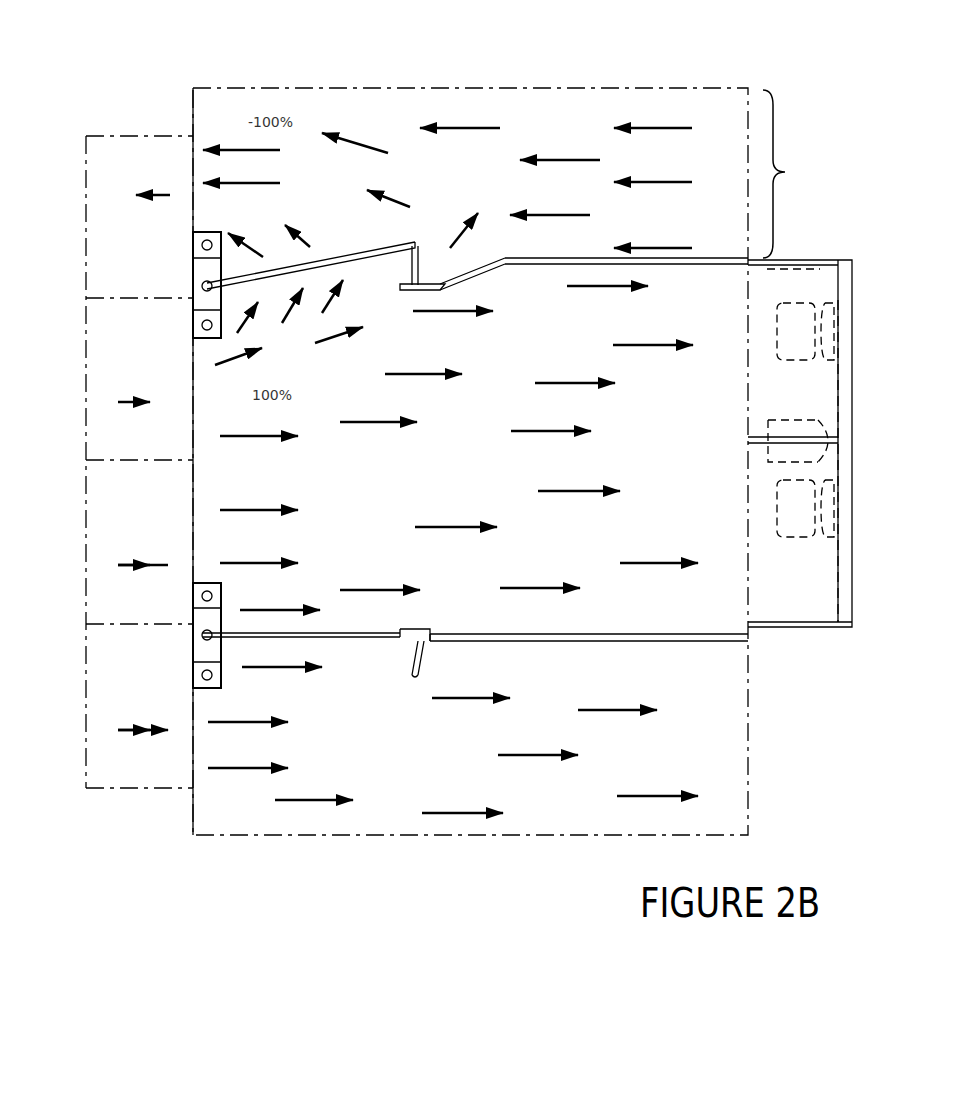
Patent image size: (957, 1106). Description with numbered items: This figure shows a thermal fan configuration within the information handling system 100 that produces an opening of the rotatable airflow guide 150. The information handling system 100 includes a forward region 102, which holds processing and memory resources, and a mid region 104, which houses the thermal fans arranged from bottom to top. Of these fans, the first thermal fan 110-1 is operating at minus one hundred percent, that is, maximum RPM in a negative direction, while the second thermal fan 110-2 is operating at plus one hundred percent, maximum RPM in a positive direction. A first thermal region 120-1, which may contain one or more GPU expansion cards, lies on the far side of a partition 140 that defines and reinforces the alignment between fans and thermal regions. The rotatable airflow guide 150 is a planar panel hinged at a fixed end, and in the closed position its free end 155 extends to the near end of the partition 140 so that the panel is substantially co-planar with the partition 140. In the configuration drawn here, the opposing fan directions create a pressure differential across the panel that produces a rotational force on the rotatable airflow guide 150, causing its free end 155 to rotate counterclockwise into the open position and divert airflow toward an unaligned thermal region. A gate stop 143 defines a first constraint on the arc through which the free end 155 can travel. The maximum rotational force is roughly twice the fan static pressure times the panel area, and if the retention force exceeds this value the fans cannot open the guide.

The information handling system 100 is at (636, 30).
The forward region 102 is at (740, 68).
The mid region 104 is at (192, 68).
The first thermal fan 110-1 is at (90, 148).
The second thermal fan 110-2 is at (90, 311).
The first thermal region 120-1 is at (811, 174).
The partition 140 is at (665, 268).
The gate stop 143 is at (402, 292).
The rotatable airflow guide 150 is at (378, 236).
The free end 155 is at (418, 246).